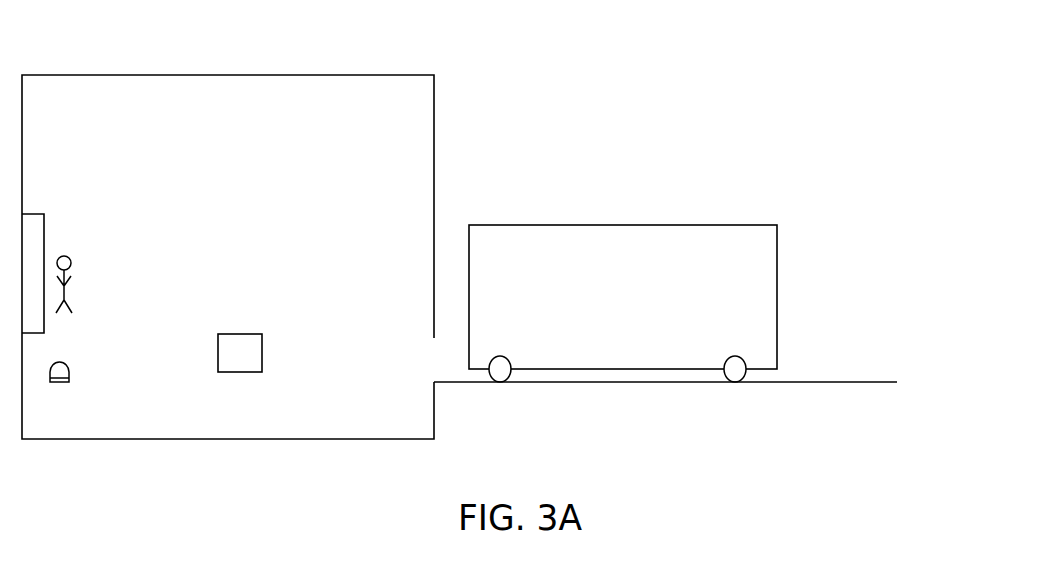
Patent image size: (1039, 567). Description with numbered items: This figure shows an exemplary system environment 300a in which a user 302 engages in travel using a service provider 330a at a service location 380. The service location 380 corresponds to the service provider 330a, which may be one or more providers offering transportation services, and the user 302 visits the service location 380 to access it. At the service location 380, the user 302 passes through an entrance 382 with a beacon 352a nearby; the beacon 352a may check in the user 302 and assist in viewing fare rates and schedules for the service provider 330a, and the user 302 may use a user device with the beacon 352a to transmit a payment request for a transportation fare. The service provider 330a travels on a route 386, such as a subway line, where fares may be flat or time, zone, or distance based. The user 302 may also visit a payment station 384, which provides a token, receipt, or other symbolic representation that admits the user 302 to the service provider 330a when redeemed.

The system environment 300a is at (680, 71).
The service location 380 is at (355, 102).
The entrance 382 is at (36, 212).
The user 302 is at (101, 299).
The beacon 352a is at (126, 390).
The payment station 384 is at (237, 329).
The service provider 330a is at (748, 264).
The route 386 is at (727, 381).